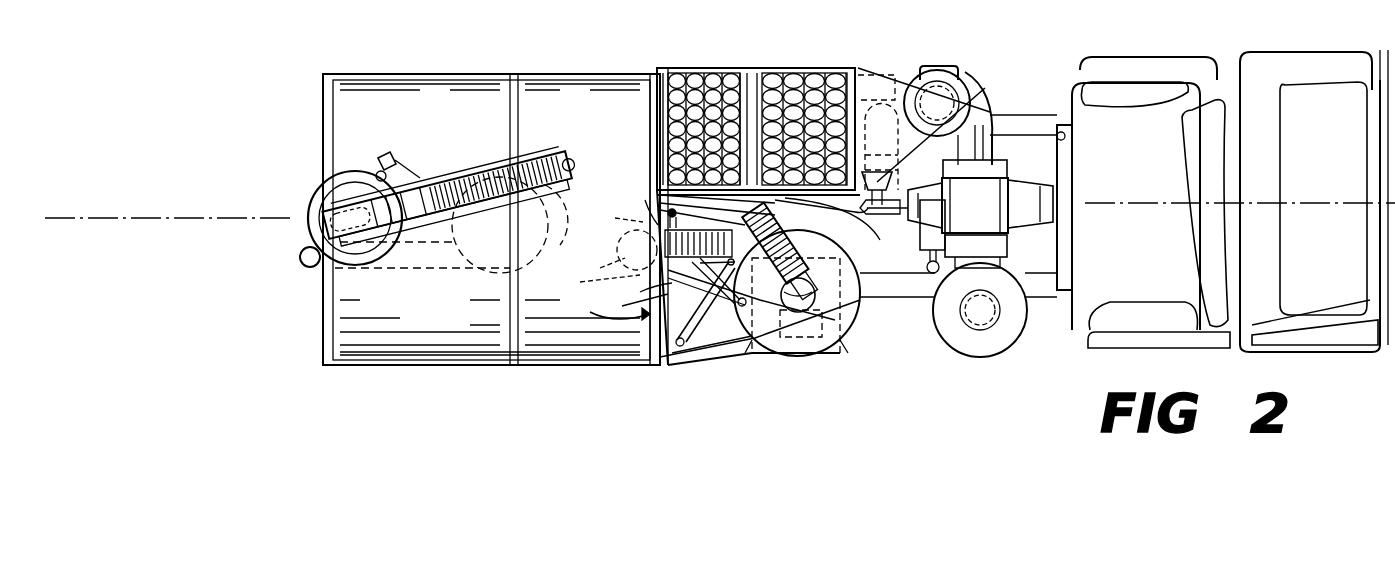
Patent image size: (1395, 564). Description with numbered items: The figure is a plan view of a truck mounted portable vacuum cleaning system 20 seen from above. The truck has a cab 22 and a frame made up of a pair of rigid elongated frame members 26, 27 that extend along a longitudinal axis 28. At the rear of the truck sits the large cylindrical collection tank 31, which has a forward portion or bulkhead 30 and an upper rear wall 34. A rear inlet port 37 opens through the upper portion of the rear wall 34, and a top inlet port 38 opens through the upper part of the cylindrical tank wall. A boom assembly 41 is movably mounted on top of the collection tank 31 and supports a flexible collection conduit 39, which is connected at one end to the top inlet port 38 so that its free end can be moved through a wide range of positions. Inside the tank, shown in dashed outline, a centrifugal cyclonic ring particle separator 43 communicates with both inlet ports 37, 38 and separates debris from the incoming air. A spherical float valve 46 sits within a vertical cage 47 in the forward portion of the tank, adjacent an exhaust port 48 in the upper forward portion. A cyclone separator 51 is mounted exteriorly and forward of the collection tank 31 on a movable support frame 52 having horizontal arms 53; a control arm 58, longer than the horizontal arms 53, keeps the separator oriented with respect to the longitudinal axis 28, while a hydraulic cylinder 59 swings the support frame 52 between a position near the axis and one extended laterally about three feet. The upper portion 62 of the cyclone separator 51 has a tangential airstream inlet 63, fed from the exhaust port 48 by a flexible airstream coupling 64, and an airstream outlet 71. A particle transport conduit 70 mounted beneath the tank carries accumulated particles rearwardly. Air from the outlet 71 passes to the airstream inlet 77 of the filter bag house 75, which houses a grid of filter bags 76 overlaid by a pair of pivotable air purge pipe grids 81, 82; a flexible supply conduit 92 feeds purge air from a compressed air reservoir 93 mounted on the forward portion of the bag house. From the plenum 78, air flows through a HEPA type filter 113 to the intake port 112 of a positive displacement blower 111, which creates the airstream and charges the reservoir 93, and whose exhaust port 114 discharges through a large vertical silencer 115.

The portable vacuum cleaning system 20 is at (960, 45).
The cab 22 is at (1200, 90).
The frame member 26 is at (1040, 292).
The frame member 27 is at (1022, 118).
The longitudinal axis 28 is at (1105, 205).
The forward portion or bulkhead 30 is at (606, 308).
The collection tank 31 is at (400, 90).
The upper rear wall 34 is at (325, 99).
The rear inlet port 37 is at (318, 270).
The top inlet port 38 is at (345, 175).
The collection conduit 39 is at (458, 178).
The boom assembly 41 is at (446, 181).
The centrifugal cyclonic ring particle separator 43 is at (496, 283).
The spherical float valve 46 is at (599, 270).
The vertical cage 47 is at (605, 253).
The exhaust port 48 is at (639, 207).
The cyclone separator 51 is at (866, 326).
The movable support frame 52 is at (708, 363).
The horizontal arm 53 is at (688, 326).
The control arm 58 is at (632, 306).
The hydraulic cylinder 59 is at (646, 291).
The upper portion 62 is at (826, 230).
The airstream inlet 63 is at (735, 236).
The airstream coupling 64 is at (750, 305).
The particle transport conduit 70 is at (690, 356).
The airstream outlet 71 is at (800, 278).
The filter bag house 75 is at (774, 33).
The filter bags 76 is at (680, 70).
The airstream inlet 77 is at (782, 212).
The plenum 78 is at (905, 85).
The air purge pipe grid 81 is at (696, 73).
The air purge pipe grid 82 is at (800, 73).
The flexible supply conduit 92 is at (880, 245).
The compressed air reservoir 93 is at (895, 180).
The positive displacement blower 111 is at (990, 185).
The intake port 112 is at (975, 105).
The HEPA type filter 113 is at (960, 90).
The exhaust port 114 is at (1000, 255).
The silencer 115 is at (988, 355).